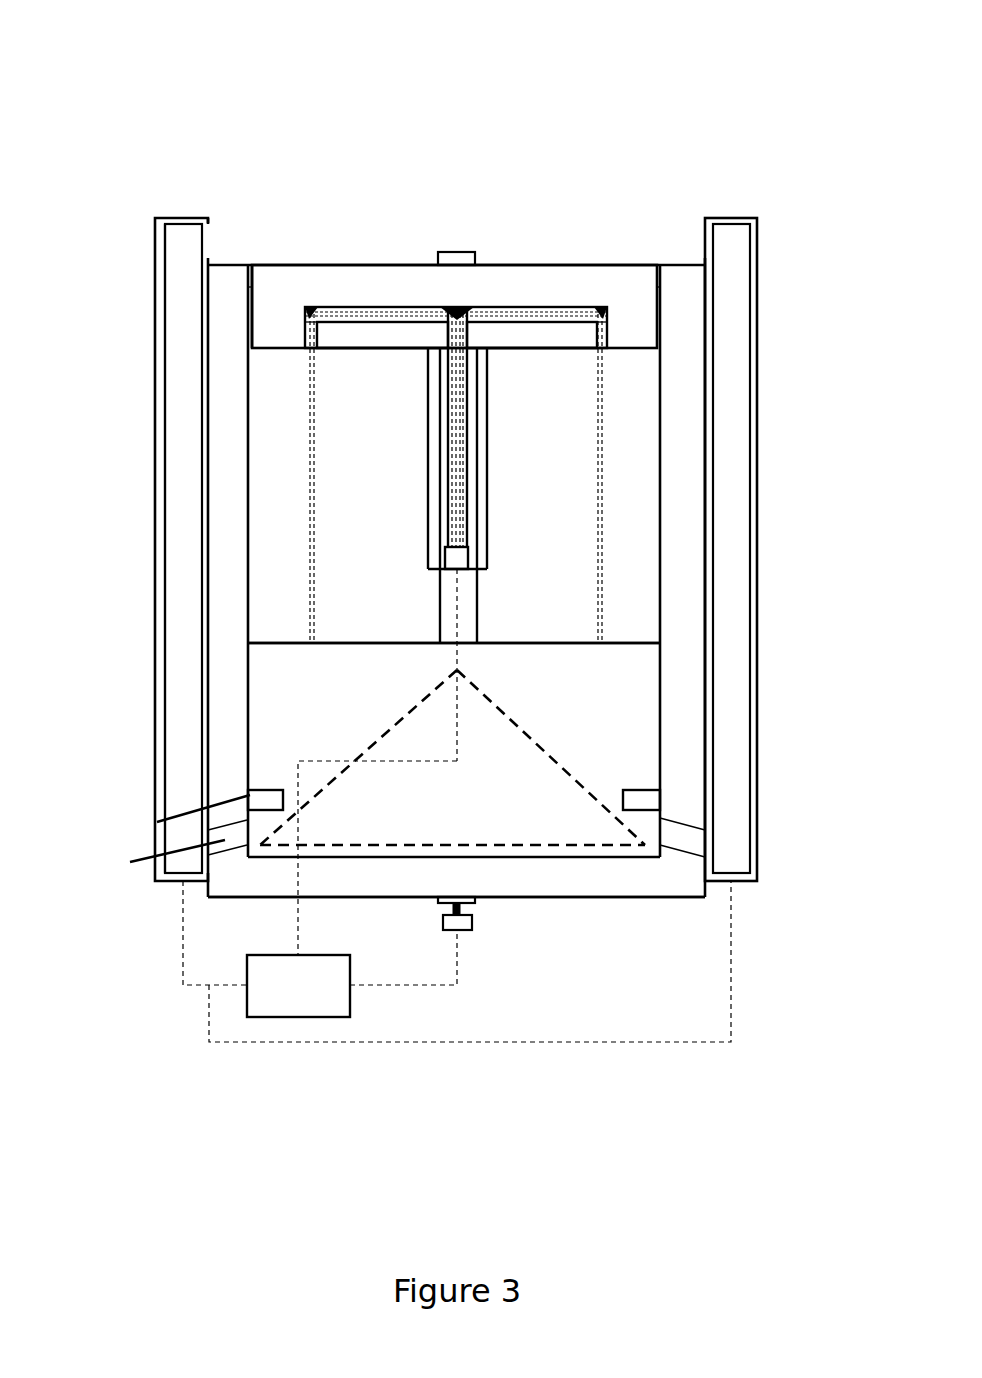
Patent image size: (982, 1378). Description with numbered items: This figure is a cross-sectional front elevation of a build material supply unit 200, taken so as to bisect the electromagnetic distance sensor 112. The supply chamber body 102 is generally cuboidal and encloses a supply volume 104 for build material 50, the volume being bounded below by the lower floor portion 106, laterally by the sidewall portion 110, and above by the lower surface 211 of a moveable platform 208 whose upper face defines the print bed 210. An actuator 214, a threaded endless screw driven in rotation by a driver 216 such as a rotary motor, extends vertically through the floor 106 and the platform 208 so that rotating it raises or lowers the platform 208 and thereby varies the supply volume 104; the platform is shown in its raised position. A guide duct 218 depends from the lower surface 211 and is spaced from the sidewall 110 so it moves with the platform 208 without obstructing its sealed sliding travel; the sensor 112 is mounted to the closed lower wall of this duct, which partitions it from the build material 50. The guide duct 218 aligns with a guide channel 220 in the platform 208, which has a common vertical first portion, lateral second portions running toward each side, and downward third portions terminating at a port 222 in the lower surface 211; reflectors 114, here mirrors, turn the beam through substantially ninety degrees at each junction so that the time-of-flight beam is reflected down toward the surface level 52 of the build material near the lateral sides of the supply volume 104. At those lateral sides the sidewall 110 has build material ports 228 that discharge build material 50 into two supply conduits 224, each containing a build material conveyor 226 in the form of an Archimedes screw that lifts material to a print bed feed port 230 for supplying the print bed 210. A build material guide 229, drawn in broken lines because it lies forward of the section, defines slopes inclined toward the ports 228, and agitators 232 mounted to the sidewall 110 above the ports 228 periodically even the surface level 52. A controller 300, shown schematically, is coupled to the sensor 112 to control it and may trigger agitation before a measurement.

The build material supply unit 200 is at (770, 33).
The supply chamber body 102 is at (686, 358).
The supply volume 104 is at (630, 532).
The lower floor portion 106 is at (643, 888).
The sidewall portion 110 is at (730, 305).
The electromagnetic distance sensor 112 is at (467, 555).
The reflectors 114 is at (600, 305).
The platform 208 is at (281, 278).
The print bed 210 is at (562, 262).
The lower surface of the platform 211 is at (285, 350).
The actuator 214 is at (456, 258).
The driver 216 is at (315, 484).
The guide duct 218 is at (487, 446).
The guide channel 220 is at (352, 305).
The port 222 is at (320, 350).
The supply conduits 224 is at (155, 478).
The build material conveyor 226 is at (188, 650).
The build material ports 228 is at (132, 862).
The build material guide 229 is at (576, 733).
The print bed feed port 230 is at (207, 243).
The agitators 232 is at (157, 822).
The build material 50 is at (645, 830).
The surface level 52 is at (586, 633).
The controller 300 is at (457, 901).